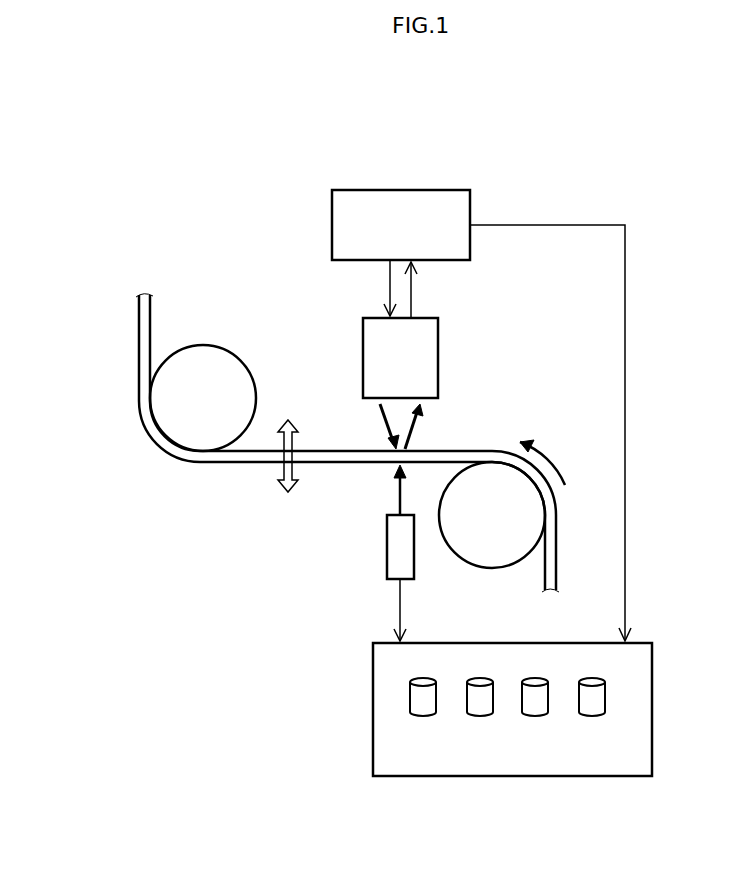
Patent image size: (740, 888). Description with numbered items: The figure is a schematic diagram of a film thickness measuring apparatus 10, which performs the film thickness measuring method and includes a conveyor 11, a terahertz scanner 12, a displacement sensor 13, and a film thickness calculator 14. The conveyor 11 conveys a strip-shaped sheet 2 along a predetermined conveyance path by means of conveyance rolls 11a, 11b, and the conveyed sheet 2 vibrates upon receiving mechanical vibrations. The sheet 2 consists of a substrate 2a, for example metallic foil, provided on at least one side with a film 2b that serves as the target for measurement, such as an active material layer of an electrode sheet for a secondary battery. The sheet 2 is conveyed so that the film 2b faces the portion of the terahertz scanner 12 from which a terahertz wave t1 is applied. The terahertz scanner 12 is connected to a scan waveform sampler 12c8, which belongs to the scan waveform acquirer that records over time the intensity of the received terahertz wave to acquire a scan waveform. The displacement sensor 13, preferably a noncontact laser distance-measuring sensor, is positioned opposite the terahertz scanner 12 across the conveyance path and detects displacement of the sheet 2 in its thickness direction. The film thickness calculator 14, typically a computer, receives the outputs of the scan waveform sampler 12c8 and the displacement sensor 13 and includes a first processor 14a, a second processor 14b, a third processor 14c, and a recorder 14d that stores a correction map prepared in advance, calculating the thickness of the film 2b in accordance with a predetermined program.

The film thickness measuring apparatus 10 is at (173, 160).
The conveyor 11 is at (125, 400).
The conveyance roll 11a is at (225, 350).
The conveyance roll 11b is at (490, 572).
The sheet 2 is at (350, 443).
The substrate 2a is at (327, 465).
The film 2b is at (447, 450).
The terahertz scanner 12 is at (450, 330).
The scan waveform sampler 12c8 is at (447, 190).
The terahertz wave t1 is at (393, 428).
The displacement sensor 13 is at (387, 562).
The film thickness calculator 14 is at (512, 752).
The first processor 14a is at (423, 716).
The second processor 14b is at (480, 716).
The third processor 14c is at (535, 716).
The recorder 14d is at (592, 716).